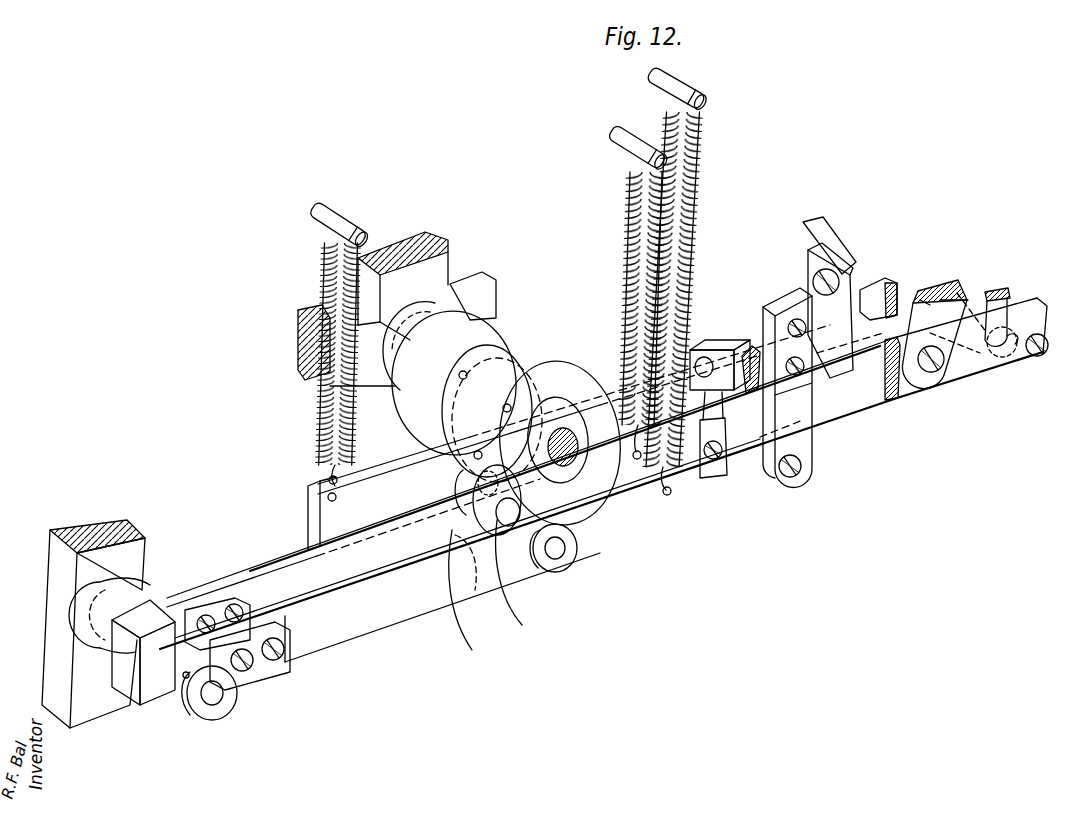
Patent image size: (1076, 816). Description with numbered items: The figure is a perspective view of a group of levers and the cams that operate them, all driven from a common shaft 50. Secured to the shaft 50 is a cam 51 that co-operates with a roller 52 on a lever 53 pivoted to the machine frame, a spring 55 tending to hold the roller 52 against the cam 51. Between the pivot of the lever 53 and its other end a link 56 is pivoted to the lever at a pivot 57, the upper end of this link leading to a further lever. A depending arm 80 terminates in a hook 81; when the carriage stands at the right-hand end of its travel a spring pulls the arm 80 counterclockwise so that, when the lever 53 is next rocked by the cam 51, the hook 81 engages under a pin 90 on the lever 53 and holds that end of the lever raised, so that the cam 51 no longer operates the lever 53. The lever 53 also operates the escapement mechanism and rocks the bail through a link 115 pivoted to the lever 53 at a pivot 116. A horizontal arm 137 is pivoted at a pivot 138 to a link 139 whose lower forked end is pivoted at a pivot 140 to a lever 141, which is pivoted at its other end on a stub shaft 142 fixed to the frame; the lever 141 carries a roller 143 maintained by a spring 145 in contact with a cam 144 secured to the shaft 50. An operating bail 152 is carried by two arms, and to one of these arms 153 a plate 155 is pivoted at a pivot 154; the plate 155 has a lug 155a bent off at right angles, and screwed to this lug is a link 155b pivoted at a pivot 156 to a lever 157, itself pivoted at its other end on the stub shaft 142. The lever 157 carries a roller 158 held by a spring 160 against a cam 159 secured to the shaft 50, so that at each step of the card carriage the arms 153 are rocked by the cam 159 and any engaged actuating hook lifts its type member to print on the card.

The shaft 50 is at (575, 430).
The cam 51 is at (417, 420).
The roller 52 is at (450, 480).
The lever 53 is at (308, 510).
The spring 55 is at (323, 427).
The link 56 is at (948, 308).
The pivot 57 is at (931, 372).
The depending arm 80 is at (1000, 296).
The hook 81 is at (1013, 340).
The pin 90 is at (1042, 354).
The link 115 is at (933, 284).
The pivot 116 is at (945, 350).
The horizontal arm 137 is at (749, 335).
The pivot 138 is at (702, 360).
The link 139 is at (726, 400).
The pivot 140 is at (715, 460).
The lever 141 is at (468, 598).
The stub shaft 142 is at (213, 693).
The roller 143 is at (495, 558).
The cam 144 is at (533, 358).
The spring 145 is at (628, 238).
The operating bail 152 is at (893, 284).
The arm 153 is at (818, 232).
The pivot 154 is at (827, 327).
The plate 155 is at (838, 335).
The lug 155a is at (782, 325).
The link 155b is at (798, 395).
The pivot 156 is at (801, 467).
The lever 157 is at (433, 592).
The roller 158 is at (560, 570).
The cam 159 is at (563, 368).
The spring 160 is at (695, 230).